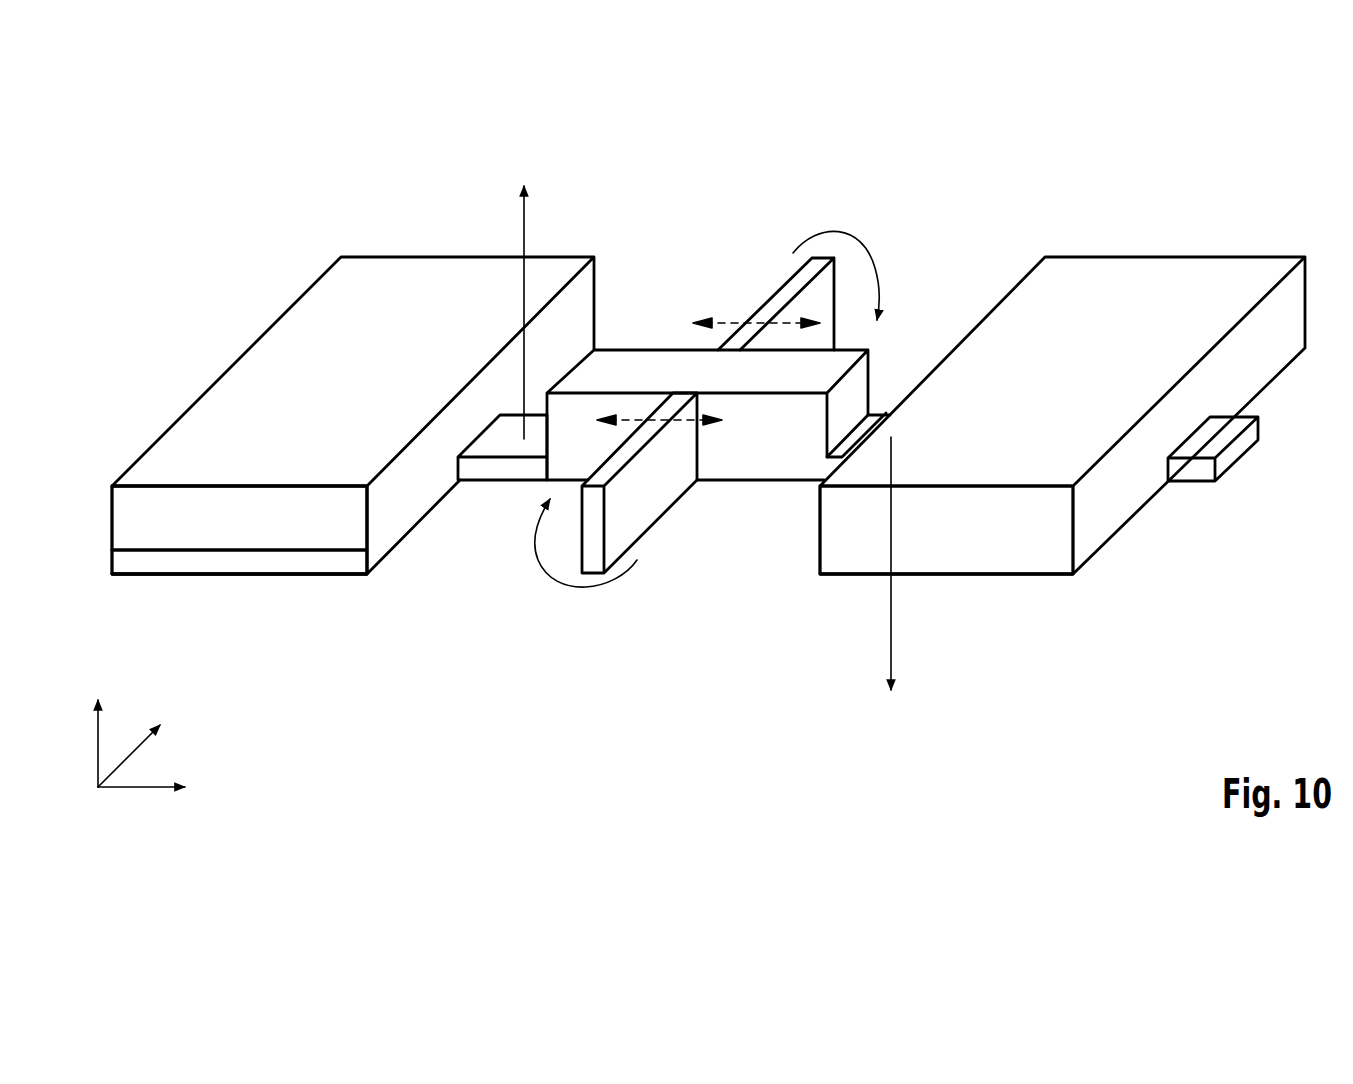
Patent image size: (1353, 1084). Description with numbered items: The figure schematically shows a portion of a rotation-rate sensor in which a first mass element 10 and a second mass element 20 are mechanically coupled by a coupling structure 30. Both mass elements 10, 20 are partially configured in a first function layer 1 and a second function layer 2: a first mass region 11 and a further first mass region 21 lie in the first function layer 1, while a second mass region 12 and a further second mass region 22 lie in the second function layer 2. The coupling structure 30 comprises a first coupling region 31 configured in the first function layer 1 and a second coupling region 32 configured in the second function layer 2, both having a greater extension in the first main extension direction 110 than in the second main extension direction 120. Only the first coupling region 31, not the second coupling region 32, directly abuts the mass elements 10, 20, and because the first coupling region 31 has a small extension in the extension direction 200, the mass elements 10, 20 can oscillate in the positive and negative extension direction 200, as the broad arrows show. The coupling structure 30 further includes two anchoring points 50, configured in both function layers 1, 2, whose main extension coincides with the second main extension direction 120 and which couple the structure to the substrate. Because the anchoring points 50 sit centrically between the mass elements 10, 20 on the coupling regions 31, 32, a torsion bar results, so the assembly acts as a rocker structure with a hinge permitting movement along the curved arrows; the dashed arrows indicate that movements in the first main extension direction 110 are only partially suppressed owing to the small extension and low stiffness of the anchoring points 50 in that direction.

The first function layer 1 is at (106, 551).
The second function layer 2 is at (106, 486).
The first mass element 10 is at (444, 281).
The first mass region 11 is at (245, 571).
The second mass region 12 is at (290, 517).
The second mass element 20 is at (1149, 281).
The further first mass region 21 is at (996, 569).
The further second mass region 22 is at (1042, 514).
The coupling structure 30 is at (635, 373).
The first coupling region 31 is at (503, 476).
The second coupling region 32 is at (796, 424).
The anchoring point 50 is at (780, 298).
The first main extension direction 110 is at (237, 803).
The second main extension direction 120 is at (189, 717).
The extension direction 200 is at (120, 692).